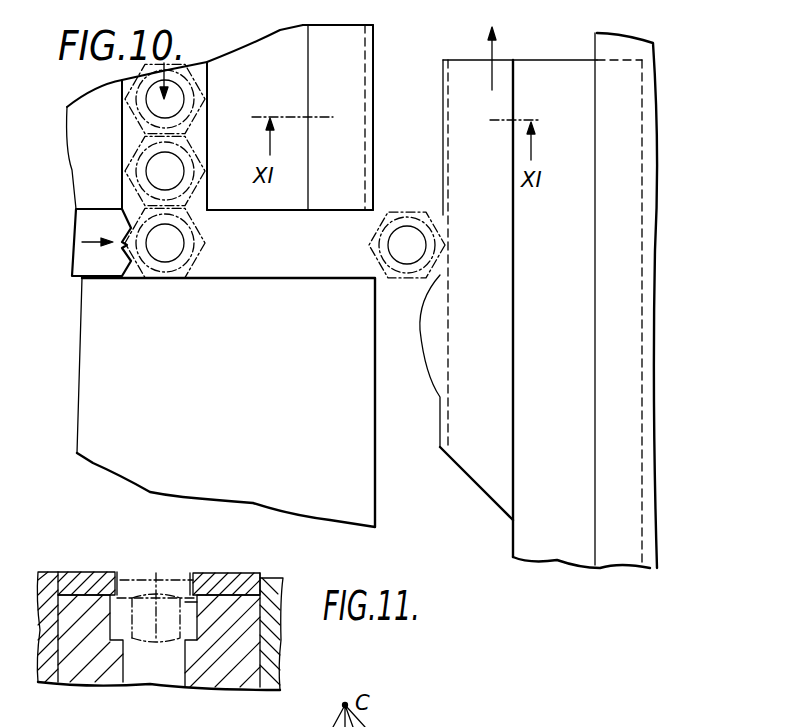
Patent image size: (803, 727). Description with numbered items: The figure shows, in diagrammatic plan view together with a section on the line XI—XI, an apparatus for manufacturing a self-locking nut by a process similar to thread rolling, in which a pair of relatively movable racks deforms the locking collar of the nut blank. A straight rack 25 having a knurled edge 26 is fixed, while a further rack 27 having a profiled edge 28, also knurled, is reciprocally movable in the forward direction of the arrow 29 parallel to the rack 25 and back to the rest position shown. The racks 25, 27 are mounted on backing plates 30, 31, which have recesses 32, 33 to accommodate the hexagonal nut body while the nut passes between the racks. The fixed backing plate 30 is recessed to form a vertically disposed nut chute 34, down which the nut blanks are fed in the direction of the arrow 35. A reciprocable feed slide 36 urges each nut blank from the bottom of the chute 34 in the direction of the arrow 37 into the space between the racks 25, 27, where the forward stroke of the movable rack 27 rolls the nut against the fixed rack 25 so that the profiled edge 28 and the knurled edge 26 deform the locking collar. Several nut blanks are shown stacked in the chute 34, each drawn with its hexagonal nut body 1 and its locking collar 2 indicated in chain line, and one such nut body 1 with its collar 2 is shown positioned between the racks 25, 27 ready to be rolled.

In FIG. 10, the hexagonal nut 1 is at (196, 98).
In FIG. 10, the threaded bore 2 is at (195, 108).
In FIG. 10, the straight rack 25 is at (343, 107).
In FIG. 11, the straight rack 25 is at (103, 572).
In FIG. 10, the knurled edge 26 is at (368, 117).
In FIG. 10, the further rack 27 is at (467, 160).
In FIG. 11, the further rack 27 is at (213, 580).
In FIG. 10, the profiled edge 28 is at (426, 370).
In FIG. 10, the arrow 29 is at (493, 80).
In FIG. 10, the backing plate 30 is at (277, 68).
In FIG. 11, the backing plate 30 is at (82, 665).
In FIG. 10, the backing plate 31 is at (573, 100).
In FIG. 11, the backing plate 31 is at (248, 617).
In FIG. 11, the recess 32 is at (122, 600).
In FIG. 11, the recess 33 is at (185, 607).
In FIG. 10, the nut chute 34 is at (123, 133).
In FIG. 10, the arrow 35 is at (170, 86).
In FIG. 10, the feed slide 36 is at (87, 218).
In FIG. 10, the arrow 37 is at (88, 243).